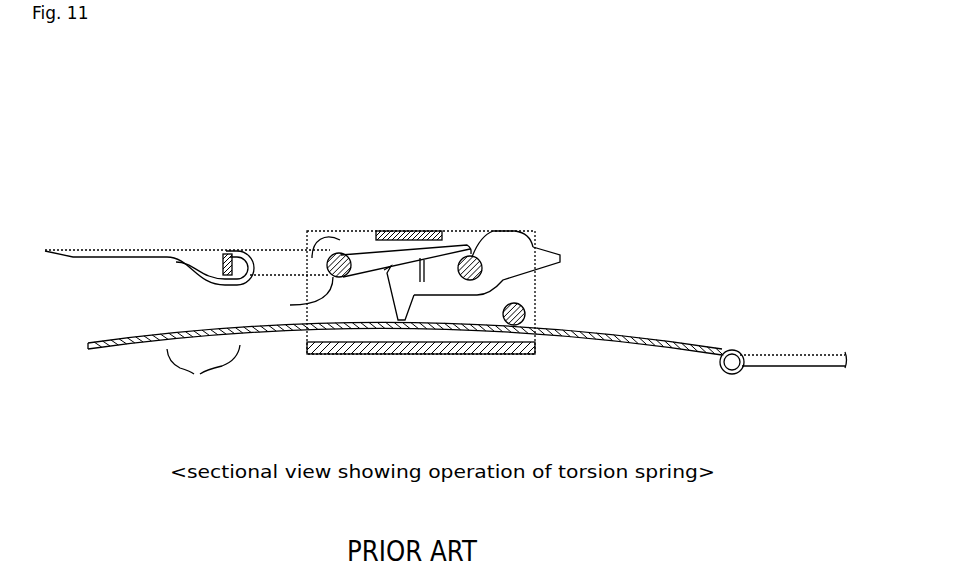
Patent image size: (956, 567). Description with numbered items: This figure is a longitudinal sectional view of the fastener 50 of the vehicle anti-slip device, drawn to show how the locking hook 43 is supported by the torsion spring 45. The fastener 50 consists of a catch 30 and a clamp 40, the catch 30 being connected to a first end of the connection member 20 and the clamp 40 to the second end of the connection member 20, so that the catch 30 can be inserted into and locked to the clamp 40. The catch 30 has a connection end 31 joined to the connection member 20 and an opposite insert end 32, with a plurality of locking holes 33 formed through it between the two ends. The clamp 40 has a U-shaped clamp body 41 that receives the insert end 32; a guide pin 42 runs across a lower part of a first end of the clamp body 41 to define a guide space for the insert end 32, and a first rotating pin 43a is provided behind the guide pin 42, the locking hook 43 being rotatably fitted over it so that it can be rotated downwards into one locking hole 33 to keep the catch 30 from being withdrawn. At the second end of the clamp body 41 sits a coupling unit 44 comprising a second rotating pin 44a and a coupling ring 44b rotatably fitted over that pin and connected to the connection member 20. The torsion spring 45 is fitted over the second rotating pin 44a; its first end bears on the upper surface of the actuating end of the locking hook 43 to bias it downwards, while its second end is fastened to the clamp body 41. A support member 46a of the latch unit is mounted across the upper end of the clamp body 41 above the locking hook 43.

The connection member 20 is at (136, 251).
The catch 30 is at (145, 352).
The connection end 31 is at (742, 373).
The insert end 32 is at (118, 342).
The locking holes 33 is at (203, 369).
The clamp 40 is at (512, 227).
The clamp body 41 is at (528, 233).
The guide pin 42 is at (525, 310).
The locking hook 43 is at (560, 251).
The first rotating pin 43a is at (472, 257).
The coupling unit 44 is at (252, 176).
The second rotating pin 44a is at (338, 253).
The coupling ring 44b is at (268, 262).
The torsion spring 45 is at (330, 280).
The support member 46a is at (408, 231).
The fastener 50 is at (705, 200).